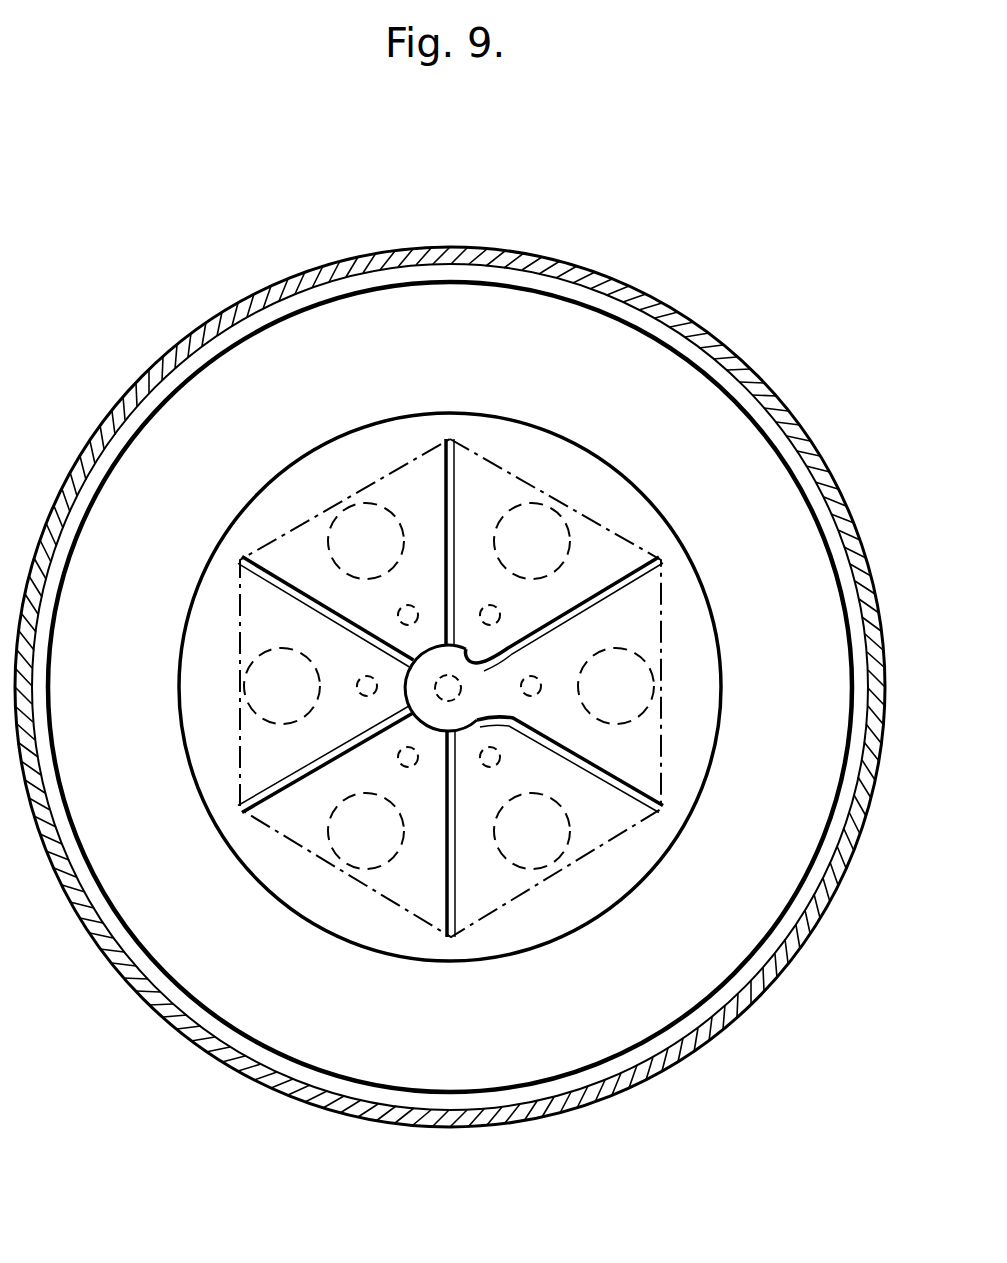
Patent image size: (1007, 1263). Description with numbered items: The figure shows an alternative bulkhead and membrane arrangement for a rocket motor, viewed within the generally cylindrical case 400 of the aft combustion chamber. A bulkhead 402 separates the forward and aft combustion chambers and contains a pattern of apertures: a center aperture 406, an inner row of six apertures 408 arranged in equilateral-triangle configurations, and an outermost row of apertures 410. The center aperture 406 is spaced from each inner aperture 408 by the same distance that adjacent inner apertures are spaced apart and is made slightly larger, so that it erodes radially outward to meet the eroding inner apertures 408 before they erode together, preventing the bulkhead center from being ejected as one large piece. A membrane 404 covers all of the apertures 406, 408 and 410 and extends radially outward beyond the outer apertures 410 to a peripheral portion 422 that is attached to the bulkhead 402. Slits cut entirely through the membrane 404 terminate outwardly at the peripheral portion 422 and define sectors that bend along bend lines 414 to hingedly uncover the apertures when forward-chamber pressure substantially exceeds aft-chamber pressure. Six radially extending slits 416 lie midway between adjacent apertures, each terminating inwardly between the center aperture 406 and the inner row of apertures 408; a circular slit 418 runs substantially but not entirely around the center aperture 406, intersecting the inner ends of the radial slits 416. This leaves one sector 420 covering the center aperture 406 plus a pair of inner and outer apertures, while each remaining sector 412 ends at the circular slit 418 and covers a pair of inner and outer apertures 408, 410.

The generally cylindrical case 400 is at (540, 250).
The bulkhead 402 is at (613, 330).
The membrane 404 is at (690, 548).
The center aperture 406 is at (437, 690).
The inner row of apertures 408 is at (408, 614).
The outermost row of apertures 410 is at (570, 540).
The sectors 412 is at (393, 487).
The bend lines 414 is at (241, 575).
The radially extending slits 416 is at (300, 585).
The circular slit 418 is at (560, 645).
The sector 420 is at (640, 643).
The peripheral portion 422 is at (632, 872).